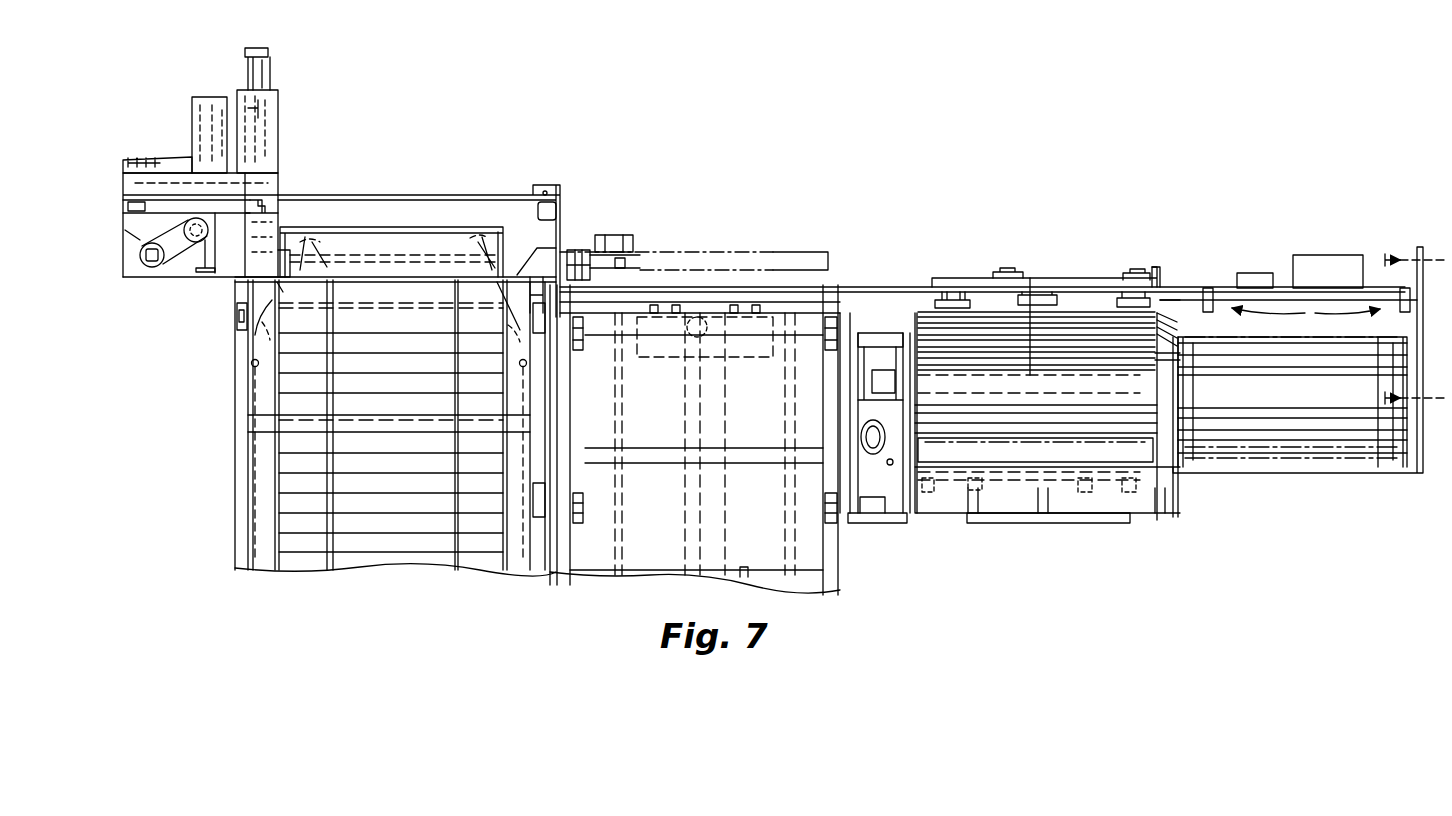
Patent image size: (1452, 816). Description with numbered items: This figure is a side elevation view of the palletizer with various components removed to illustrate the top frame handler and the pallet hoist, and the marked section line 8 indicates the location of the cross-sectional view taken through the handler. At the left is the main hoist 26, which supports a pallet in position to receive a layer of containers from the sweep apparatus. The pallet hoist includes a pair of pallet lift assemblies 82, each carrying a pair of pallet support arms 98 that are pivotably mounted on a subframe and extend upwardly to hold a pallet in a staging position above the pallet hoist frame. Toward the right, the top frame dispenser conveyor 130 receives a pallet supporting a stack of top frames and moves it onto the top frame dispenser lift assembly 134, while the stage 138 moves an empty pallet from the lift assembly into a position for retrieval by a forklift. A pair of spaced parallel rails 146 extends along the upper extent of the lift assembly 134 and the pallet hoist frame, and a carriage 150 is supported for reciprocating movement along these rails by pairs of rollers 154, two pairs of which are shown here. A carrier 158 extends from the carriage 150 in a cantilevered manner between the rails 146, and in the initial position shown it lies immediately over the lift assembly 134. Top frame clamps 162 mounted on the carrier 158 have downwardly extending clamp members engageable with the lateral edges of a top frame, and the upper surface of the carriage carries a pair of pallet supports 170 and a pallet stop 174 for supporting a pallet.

The main hoist 26 is at (481, 183).
The pallet lift assembly 82 is at (745, 362).
The pallet support arm 98 is at (658, 270).
The top frame dispenser conveyor 130 is at (1285, 478).
The top frame dispenser lift assembly 134 is at (873, 527).
The stage 138 is at (1131, 502).
The rail 146 is at (898, 287).
The carriage 150 is at (1372, 280).
The pair of rollers 154 is at (1306, 312).
The carrier 158 is at (1093, 278).
The top frame clamp 162 is at (960, 300).
The pallet support 170 is at (1009, 278).
The pallet stop 174 is at (1160, 300).
The section line 8- 8 is at (1416, 344).